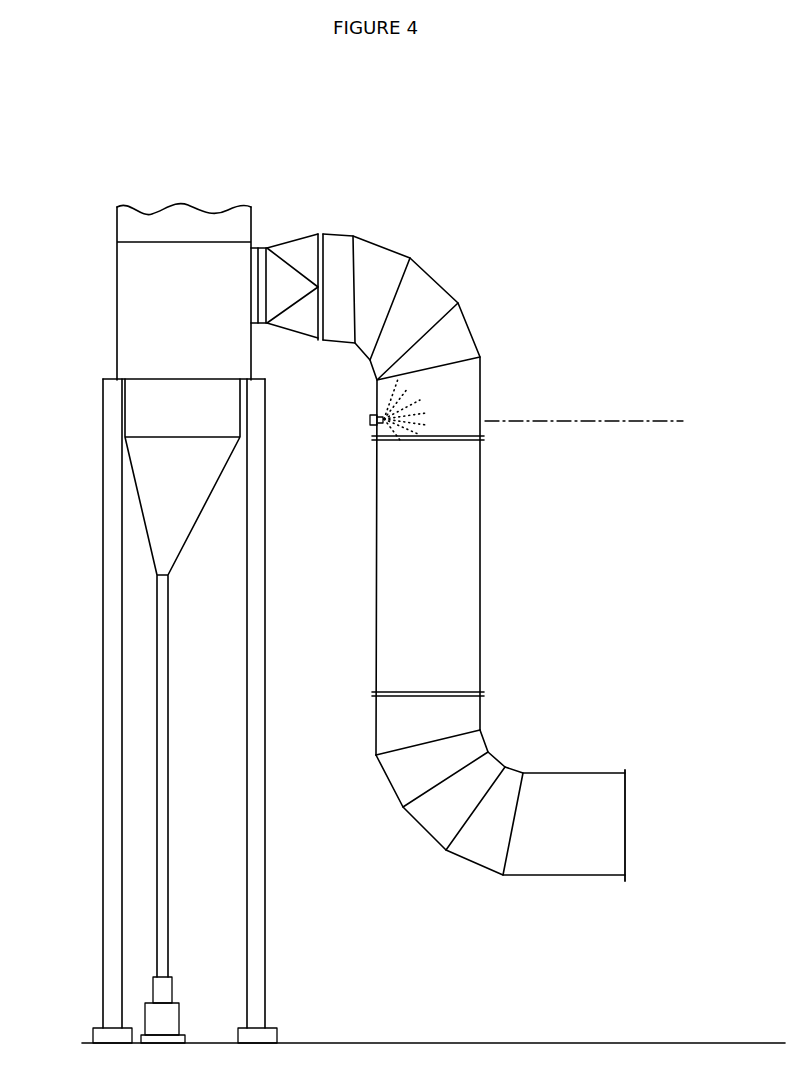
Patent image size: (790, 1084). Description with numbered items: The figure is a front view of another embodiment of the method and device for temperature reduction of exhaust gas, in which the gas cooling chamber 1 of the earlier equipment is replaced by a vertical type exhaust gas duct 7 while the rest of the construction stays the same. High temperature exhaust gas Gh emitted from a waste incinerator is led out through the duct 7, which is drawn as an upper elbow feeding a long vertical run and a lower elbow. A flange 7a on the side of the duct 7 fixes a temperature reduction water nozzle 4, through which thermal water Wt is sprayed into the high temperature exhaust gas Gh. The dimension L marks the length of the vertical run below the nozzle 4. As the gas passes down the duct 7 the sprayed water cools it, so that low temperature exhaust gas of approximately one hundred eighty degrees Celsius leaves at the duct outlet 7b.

The gas cooling chamber 1 is at (310, 172).
The temperature reduction water nozzle 4 is at (378, 397).
The exhaust gas duct 7 is at (486, 412).
The flange 7a is at (372, 424).
The duct outlet 7b is at (625, 798).
The high temperature exhaust gas Gh is at (238, 287).
The thermal water Wt is at (367, 419).
The duct length L is at (638, 823).